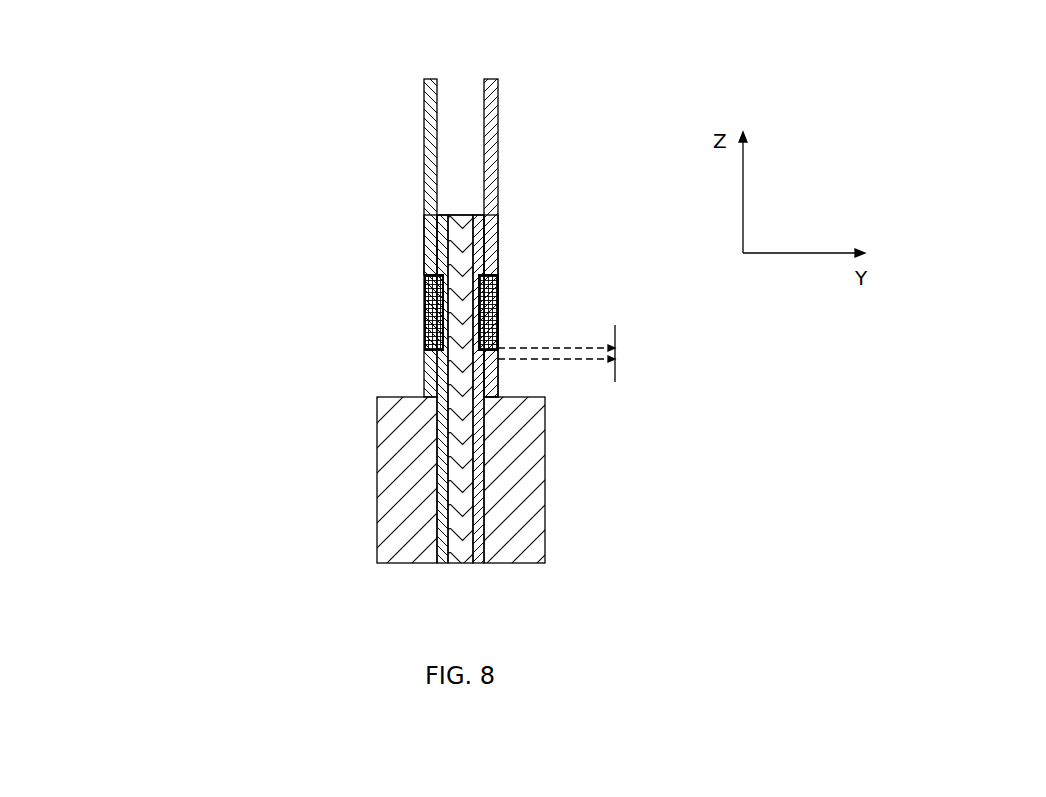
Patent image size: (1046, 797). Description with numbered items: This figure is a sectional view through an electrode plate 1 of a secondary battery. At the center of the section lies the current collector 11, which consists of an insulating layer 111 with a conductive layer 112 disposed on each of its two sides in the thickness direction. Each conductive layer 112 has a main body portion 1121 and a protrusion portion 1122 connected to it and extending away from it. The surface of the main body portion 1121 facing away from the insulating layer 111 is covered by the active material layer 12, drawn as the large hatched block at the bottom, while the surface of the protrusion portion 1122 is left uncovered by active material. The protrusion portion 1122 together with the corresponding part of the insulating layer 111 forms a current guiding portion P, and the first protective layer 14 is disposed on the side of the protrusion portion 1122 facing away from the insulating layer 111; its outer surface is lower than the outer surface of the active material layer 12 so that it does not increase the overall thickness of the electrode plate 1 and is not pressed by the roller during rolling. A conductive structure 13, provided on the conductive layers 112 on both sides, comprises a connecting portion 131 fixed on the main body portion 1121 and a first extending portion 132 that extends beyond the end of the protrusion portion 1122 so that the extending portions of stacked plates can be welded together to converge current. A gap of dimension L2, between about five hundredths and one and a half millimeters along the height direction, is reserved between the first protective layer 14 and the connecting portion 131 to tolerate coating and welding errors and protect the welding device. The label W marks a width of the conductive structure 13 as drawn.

The electrode plate 1 is at (140, 265).
The current collector 11 is at (219, 393).
The insulating layer 111 is at (446, 518).
The conductive layer 112 is at (273, 381).
The main body portion 1121 is at (446, 457).
The protrusion portion 1122 is at (425, 351).
The active material layer 12 is at (545, 503).
The conductive structure 13 is at (339, 254).
The connecting portion 131 is at (425, 316).
The first extending portion 132 is at (425, 249).
The first protective layer 14 is at (498, 378).
The current guiding portion P is at (462, 207).
The width W is at (498, 309).
The gap dimension L2 is at (572, 353).